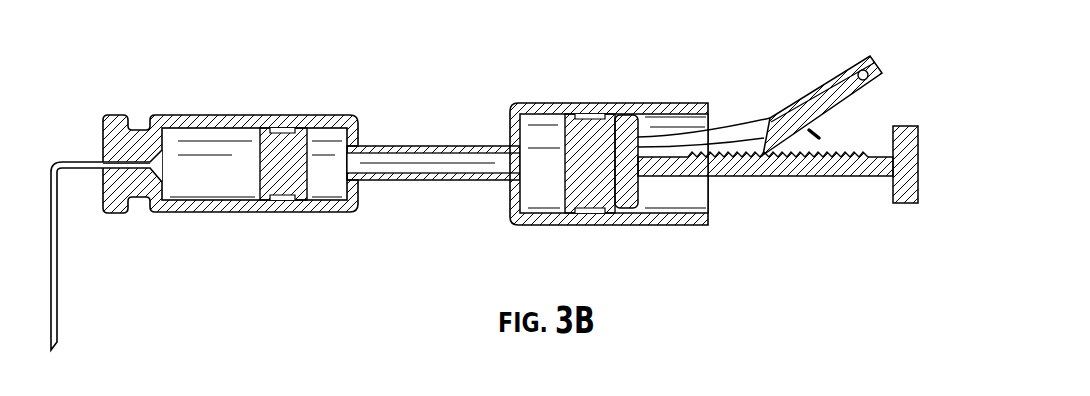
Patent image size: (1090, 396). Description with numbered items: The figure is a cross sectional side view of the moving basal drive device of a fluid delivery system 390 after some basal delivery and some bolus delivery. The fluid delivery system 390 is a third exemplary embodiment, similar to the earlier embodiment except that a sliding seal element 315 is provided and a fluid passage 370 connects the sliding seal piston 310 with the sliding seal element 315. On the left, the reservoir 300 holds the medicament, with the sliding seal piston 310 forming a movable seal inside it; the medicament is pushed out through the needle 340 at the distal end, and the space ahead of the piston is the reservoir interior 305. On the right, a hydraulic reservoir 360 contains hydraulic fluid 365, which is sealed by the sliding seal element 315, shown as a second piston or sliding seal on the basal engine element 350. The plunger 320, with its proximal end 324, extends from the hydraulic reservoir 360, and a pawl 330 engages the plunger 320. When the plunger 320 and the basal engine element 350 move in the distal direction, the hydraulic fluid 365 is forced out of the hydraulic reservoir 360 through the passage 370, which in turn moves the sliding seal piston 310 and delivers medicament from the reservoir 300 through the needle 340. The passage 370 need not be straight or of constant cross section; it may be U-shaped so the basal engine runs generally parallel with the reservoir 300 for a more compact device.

The fluid delivery system 390 is at (174, 62).
The reservoir 300 is at (186, 115).
The reservoir 305 is at (188, 180).
The sliding seal piston 310 is at (284, 128).
The needle 340 is at (57, 310).
The fluid passage 370 is at (398, 146).
The hydraulic reservoir 360 is at (553, 103).
The hydraulic fluid 365 is at (548, 190).
The sliding seal element 315 is at (627, 115).
The plunger 320 is at (793, 177).
The handle 324 is at (918, 157).
The pawl 330 is at (867, 90).
The basal engine element 350 is at (640, 185).